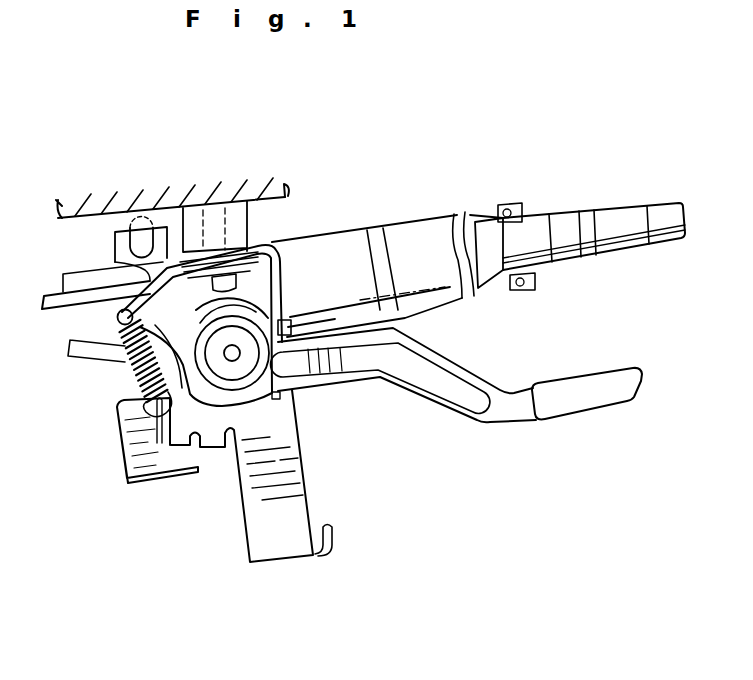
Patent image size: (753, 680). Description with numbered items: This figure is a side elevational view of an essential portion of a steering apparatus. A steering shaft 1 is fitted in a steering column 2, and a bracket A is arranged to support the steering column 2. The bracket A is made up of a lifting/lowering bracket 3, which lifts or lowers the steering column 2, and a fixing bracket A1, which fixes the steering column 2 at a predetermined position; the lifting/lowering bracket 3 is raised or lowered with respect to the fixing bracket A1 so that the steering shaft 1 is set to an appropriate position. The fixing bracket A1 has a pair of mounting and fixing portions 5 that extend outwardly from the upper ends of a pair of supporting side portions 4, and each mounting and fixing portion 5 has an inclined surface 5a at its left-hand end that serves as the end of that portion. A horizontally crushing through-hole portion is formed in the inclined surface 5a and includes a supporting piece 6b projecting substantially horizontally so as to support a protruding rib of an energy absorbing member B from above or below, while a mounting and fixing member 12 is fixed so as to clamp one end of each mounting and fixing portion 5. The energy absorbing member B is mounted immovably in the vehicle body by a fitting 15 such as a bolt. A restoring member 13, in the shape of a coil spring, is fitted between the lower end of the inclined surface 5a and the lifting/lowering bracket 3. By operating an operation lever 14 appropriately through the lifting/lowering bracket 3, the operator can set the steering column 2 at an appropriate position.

The steering shaft 1 is at (566, 225).
The steering column 2 is at (431, 210).
The lifting/lowering bracket 3 is at (283, 452).
The supporting side portions 4 is at (277, 287).
The mounting and fixing portions 5 is at (195, 247).
The inclined surface 5a is at (118, 312).
The supporting piece 6b is at (115, 262).
The mounting and fixing member 12 is at (238, 241).
The restoring member 13 is at (137, 383).
The operation lever 14 is at (470, 395).
The fitting 15 is at (204, 312).
The bracket A is at (286, 250).
The fixing bracket A1 is at (294, 296).
The energy absorbing member B is at (46, 281).